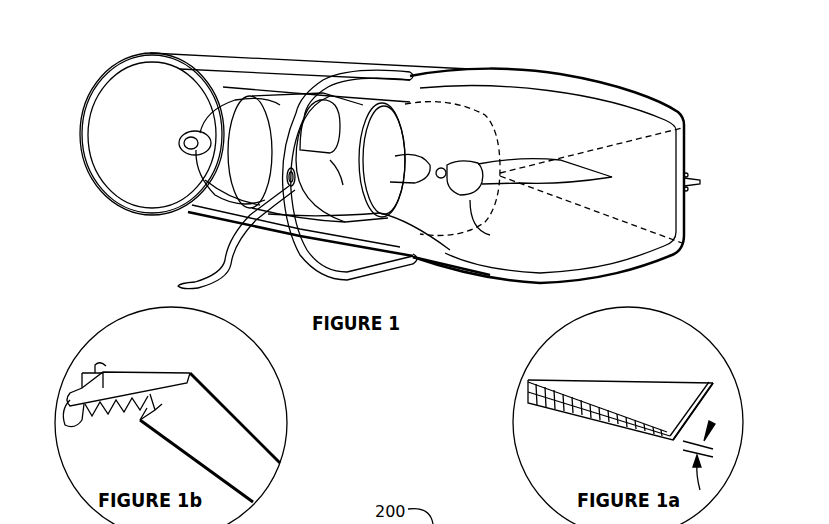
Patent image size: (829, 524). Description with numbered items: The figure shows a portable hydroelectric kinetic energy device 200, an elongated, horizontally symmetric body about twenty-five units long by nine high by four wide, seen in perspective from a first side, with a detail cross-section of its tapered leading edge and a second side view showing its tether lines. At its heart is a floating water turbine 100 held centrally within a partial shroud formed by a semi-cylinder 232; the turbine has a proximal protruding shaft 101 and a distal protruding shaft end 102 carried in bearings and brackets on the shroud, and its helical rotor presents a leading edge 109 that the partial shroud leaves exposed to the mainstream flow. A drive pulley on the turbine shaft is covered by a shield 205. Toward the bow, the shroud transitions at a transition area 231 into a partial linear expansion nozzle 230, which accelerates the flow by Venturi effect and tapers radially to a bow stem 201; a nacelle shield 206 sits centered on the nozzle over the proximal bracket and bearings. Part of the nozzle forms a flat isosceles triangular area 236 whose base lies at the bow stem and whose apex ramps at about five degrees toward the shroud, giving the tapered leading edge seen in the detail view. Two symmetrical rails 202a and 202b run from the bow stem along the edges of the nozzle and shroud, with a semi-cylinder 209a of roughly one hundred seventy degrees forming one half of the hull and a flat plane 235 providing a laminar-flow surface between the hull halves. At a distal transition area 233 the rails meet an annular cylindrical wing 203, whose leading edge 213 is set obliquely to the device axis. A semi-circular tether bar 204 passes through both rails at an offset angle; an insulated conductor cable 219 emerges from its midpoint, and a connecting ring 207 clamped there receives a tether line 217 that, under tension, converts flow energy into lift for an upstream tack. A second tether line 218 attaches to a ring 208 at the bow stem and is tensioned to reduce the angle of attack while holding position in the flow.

In FIG. 1, the turbine 100 is at (410, 163).
In FIG. 1, the proximal protruding shaft 101 is at (442, 170).
In FIG. 1, the distal protruding shaft end 102 is at (216, 133).
In FIG. 1, the leading edge of the helical rotor 109 is at (417, 228).
In FIG. 1, the portable hydroelectric kinetic energy device 200 is at (510, 50).
In FIG. 1B, the portable hydroelectric kinetic energy device 200 is at (178, 356).
In FIG. 1, the bow stem 201 is at (690, 210).
In FIG. 1A, the bow stem 201 is at (713, 385).
In FIG. 1, the rail 202a is at (300, 60).
In FIG. 1, the rail 202b is at (227, 210).
In FIG. 1, the annular cylindrical wing 203 is at (110, 77).
In FIG. 1, the tether bar 204 is at (307, 253).
In FIG. 1, the shield 205 is at (187, 140).
In FIG. 1, the nacelle shield 206 is at (537, 172).
In FIG. 1, the connecting ring 207 is at (250, 220).
In FIG. 1, the ring 208 is at (733, 153).
In FIG. 1, the semi-cylinder 209a is at (239, 63).
In FIG. 1, the leading edge 213 is at (88, 180).
In FIG. 1B, the tether line 217 is at (200, 460).
In FIG. 1B, the second tether line 218 is at (217, 400).
In FIG. 1, the insulated conductor cable 219 is at (203, 280).
In FIG. 1B, the insulated conductor cable 219 is at (172, 447).
In FIG. 1, the partial linear expansion nozzle 230 is at (587, 113).
In FIG. 1, the transition area 231 is at (484, 258).
In FIG. 1, the semi-cylinder 232 is at (457, 240).
In FIG. 1, the distal transition area 233 is at (200, 185).
In FIG. 1A, the flat plane 235 is at (585, 412).
In FIG. 1, the flat isosceles triangular area 236 is at (657, 186).
In FIG. 1A, the flat isosceles triangular area 236 is at (645, 390).